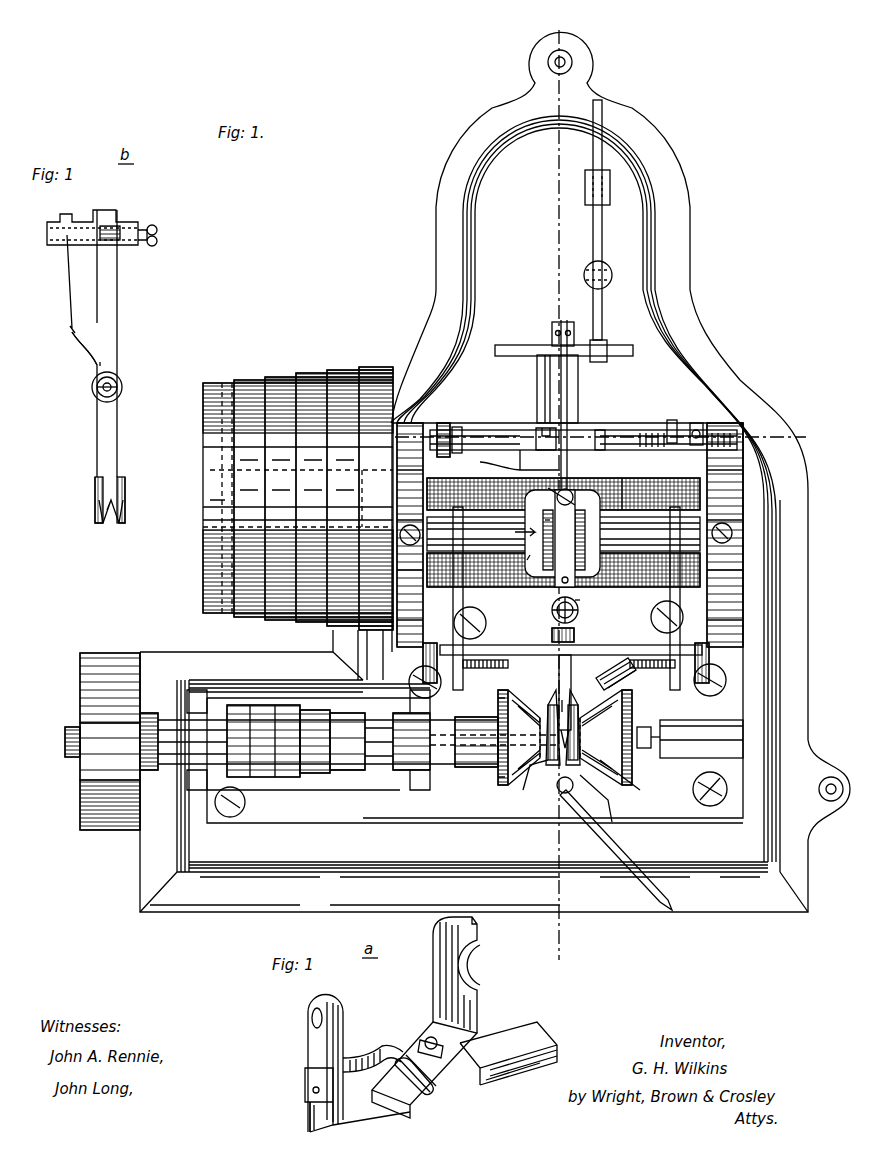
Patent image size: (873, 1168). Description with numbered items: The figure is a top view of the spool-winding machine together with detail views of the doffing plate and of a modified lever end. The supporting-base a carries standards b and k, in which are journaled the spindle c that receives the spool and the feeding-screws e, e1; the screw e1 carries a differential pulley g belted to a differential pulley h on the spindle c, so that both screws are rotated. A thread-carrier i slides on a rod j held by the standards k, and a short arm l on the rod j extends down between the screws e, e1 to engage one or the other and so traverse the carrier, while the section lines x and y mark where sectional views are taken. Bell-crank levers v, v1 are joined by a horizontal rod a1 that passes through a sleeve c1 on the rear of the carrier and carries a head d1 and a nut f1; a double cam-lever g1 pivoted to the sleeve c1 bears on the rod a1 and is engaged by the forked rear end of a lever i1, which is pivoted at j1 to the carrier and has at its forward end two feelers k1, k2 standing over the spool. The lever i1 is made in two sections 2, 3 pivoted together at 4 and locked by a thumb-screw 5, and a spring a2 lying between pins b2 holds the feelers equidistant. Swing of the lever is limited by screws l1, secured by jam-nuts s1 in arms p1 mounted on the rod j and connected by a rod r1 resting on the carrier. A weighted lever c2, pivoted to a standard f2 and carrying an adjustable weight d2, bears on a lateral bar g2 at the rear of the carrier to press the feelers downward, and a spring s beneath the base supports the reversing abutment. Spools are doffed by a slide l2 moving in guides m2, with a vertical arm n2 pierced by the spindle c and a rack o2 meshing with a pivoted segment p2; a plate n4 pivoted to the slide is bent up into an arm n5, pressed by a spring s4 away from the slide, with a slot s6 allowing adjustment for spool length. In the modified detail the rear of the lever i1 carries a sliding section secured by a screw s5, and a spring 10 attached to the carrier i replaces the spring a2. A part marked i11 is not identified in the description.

In FIG. 1, the section line x x is at (562, 487).
In FIG. 1, the section line y y is at (588, 439).
In FIG. 1, the shaft or spindle c is at (64, 742).
In FIG. 1, the standards or bearings b is at (319, 740).
In FIG. 1, the differential pulley h is at (295, 775).
In FIG. 1, the supporting-base a is at (531, 747).
In FIG. 1, the feeler k1 is at (548, 706).
In FIG. 1B, the feeler k1 is at (95, 500).
In FIG. 1, the feeler k2 is at (580, 706).
In FIG. 1B, the feeler k2 is at (125, 500).
In FIG. 1, the lower armature rod i'' i11 is at (565, 701).
In FIG. 1, the section of lever i' 3 is at (557, 695).
In FIG. 1B, the section of lever i' 3 is at (106, 355).
In FIG. 1, the vertical arm n5 is at (609, 674).
In FIG. 1A, the vertical arm n5 is at (433, 958).
In FIG. 1, the vertical arm n2 is at (523, 788).
In FIG. 1A, the vertical arm n2 is at (343, 1034).
In FIG. 1, the segment p2 is at (562, 790).
In FIG. 1, the rack o2 is at (598, 785).
In FIG. 1A, the rack o2 is at (298, 1116).
In FIG. 1, the plate n4 is at (612, 800).
In FIG. 1A, the plate n4 is at (426, 1040).
In FIG. 1, the lateral bar g2 is at (505, 345).
In FIG. 1, the slide l2 is at (650, 740).
In FIG. 1A, the slide l2 is at (518, 1034).
In FIG. 1, the guides m2 is at (705, 765).
In FIG. 1, the standards k is at (397, 505).
In FIG. 1, the screw l1 is at (410, 545).
In FIG. 1, the feeding-screw e is at (622, 590).
In FIG. 1, the feeding-screw e1 is at (622, 478).
In FIG. 1, the rod r1 is at (478, 636).
In FIG. 1, the arm p1 is at (440, 680).
In FIG. 1, the spring s is at (429, 685).
In FIG. 1, the jam-nut s1 is at (711, 688).
In FIG. 1, the short arm l is at (546, 575).
In FIG. 1, the rod j is at (527, 560).
In FIG. 1, the section of lever i' 2 is at (556, 515).
In FIG. 1, the lever i1 is at (500, 464).
In FIG. 1B, the lever i1 is at (118, 300).
In FIG. 1, the pivot j1 is at (579, 610).
In FIG. 1B, the pivot j1 is at (122, 392).
In FIG. 1, the pivot 4 is at (585, 595).
In FIG. 1, the thumb-screw 5 is at (572, 492).
In FIG. 1, the thread-carrier i is at (569, 420).
In FIG. 1B, the thread-carrier i is at (77, 348).
In FIG. 1, the horizontal rod a1 is at (490, 432).
In FIG. 1, the head d1 is at (444, 423).
In FIG. 1, the bell-crank lever v is at (458, 427).
In FIG. 1, the bell-crank lever v1 is at (672, 420).
In FIG. 1, the nut f1 is at (700, 423).
In FIG. 1, the double cam-lever g1 is at (545, 428).
In FIG. 1B, the double cam-lever g1 is at (52, 222).
In FIG. 1, the sleeve c1 is at (606, 436).
In FIG. 1, the spring a2 is at (545, 380).
In FIG. 1, the pins b2 is at (553, 332).
In FIG. 1, the weighted lever c2 is at (602, 236).
In FIG. 1, the adjustable weight d2 is at (610, 190).
In FIG. 1, the standard f2 is at (612, 275).
In FIG. 1, the differential pulley g is at (298, 489).
In FIG. 1B, the screw s5 is at (146, 228).
In FIG. 1B, the spring 10 is at (69, 286).
In FIG. 1A, the slot s6 is at (436, 1082).
In FIG. 1A, the spring s4 is at (373, 1054).